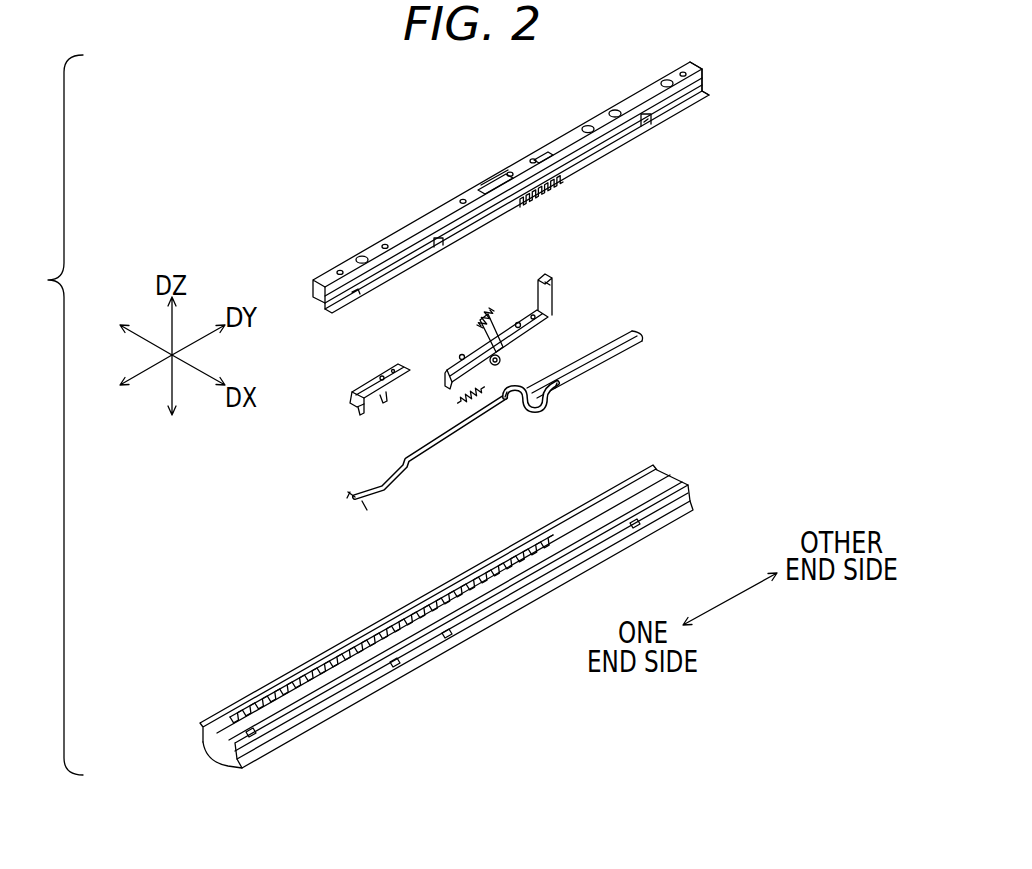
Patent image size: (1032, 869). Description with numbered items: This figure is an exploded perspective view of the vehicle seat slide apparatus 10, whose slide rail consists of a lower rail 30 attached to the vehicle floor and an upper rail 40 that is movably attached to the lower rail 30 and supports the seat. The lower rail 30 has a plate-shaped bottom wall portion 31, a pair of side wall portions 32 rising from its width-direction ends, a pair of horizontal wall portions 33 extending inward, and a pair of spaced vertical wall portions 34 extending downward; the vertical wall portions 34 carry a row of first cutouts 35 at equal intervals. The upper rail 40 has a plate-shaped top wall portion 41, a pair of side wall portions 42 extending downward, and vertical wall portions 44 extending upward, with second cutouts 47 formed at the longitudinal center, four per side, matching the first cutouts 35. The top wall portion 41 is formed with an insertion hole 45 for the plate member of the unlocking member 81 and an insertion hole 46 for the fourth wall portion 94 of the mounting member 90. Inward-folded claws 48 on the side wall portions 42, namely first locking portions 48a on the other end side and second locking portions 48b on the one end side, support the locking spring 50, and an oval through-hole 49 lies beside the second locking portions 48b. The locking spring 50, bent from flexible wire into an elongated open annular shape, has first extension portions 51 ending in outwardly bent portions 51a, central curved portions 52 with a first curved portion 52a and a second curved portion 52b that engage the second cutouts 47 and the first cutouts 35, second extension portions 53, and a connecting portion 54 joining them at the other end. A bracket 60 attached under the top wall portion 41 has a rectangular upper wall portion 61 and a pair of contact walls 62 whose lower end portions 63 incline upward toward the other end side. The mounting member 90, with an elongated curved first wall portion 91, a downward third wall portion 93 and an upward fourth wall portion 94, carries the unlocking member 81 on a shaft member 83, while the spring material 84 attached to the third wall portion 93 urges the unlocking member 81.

The vehicle seat slide apparatus 10 is at (746, 105).
The lower rail 30 is at (440, 658).
The bottom wall portion 31 is at (227, 752).
The side wall portions 32 is at (353, 693).
The horizontal wall portions 33 is at (247, 695).
The vertical wall portions 34 is at (307, 677).
The first cutout 35 is at (497, 593).
The upper rail 40 is at (437, 207).
The top wall portion 41 is at (400, 240).
The side wall portions 42 is at (482, 220).
The vertical wall portions 44 is at (388, 283).
The insertion hole 45 is at (485, 190).
The insertion hole 46 is at (543, 157).
The second cutout 47 is at (533, 207).
The claws 48 is at (567, 206).
The first locking portions 48a is at (647, 117).
The second locking portions 48b is at (440, 247).
The through-hole 49 is at (377, 270).
The locking spring 50 is at (630, 328).
The first extension portions 51 is at (392, 468).
The bent portion 51a is at (350, 499).
The curved portion 52 is at (640, 398).
The first curved portion 52a is at (533, 413).
The second curved portion 52b is at (560, 397).
The second extension portions 53 is at (608, 344).
The connecting portion 54 is at (643, 335).
The bracket 60 is at (347, 385).
The upper wall portion 61 is at (365, 382).
The contact walls 62 is at (347, 395).
The lower end portion 63 is at (350, 407).
The unlocking member 81 is at (480, 318).
The shaft member 83 is at (503, 360).
The spring material 84 is at (452, 403).
The mounting member 90 is at (547, 335).
The first wall portion 91 is at (457, 342).
The third wall portion 93 is at (443, 382).
The fourth wall portion 94 is at (553, 290).